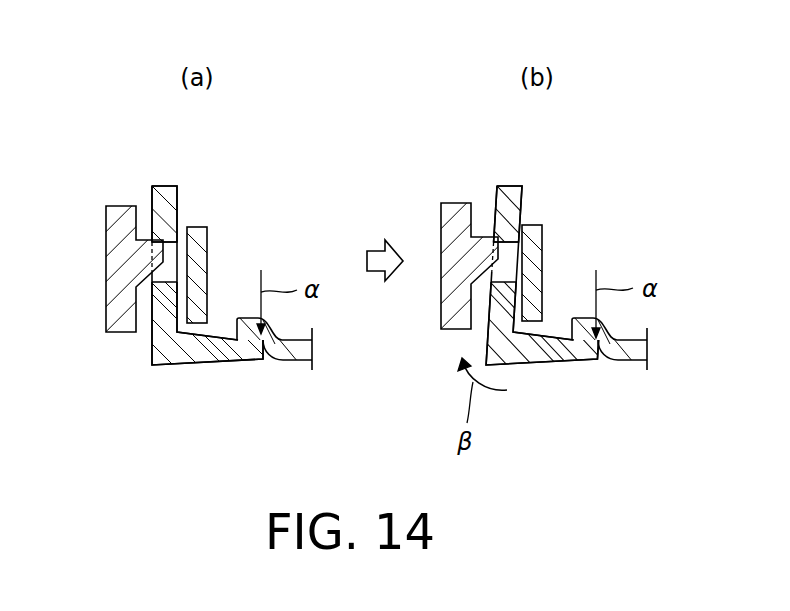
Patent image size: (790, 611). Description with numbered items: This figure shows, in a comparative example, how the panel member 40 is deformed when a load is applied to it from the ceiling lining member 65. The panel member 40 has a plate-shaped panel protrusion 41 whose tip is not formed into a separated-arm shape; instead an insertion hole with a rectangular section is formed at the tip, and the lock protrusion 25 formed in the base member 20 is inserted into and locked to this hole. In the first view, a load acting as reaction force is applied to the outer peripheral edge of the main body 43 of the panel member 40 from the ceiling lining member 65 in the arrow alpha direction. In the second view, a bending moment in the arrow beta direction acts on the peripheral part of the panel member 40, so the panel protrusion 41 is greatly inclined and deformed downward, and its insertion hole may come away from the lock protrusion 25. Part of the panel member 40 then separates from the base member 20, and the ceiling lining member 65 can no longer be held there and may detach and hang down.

The base member 20 is at (200, 242).
The lock protrusion 25 is at (145, 258).
The panel member 40 is at (225, 350).
The panel protrusion 41 is at (163, 197).
The main body 43 is at (188, 353).
The ceiling lining member 65 is at (292, 353).